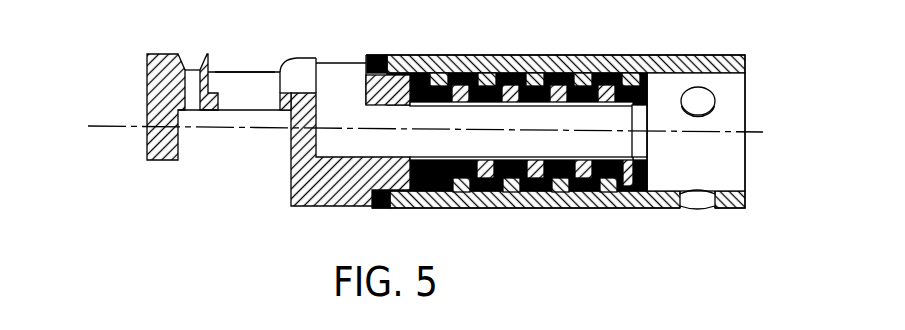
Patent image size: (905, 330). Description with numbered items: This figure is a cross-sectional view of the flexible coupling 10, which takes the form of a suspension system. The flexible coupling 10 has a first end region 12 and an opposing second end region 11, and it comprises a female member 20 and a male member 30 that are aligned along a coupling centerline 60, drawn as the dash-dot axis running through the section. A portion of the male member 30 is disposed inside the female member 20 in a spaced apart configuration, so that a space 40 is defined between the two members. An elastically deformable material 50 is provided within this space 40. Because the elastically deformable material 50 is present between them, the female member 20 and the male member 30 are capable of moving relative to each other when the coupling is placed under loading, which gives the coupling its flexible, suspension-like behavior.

The flexible coupling 10 is at (211, 197).
The second end region 11 is at (242, 71).
The first end region 12 is at (675, 209).
The female member 20 is at (665, 56).
The male member 30 is at (322, 207).
The space 40 is at (462, 55).
The elastically deformable material 50 is at (375, 54).
The coupling centerline 60 is at (102, 126).